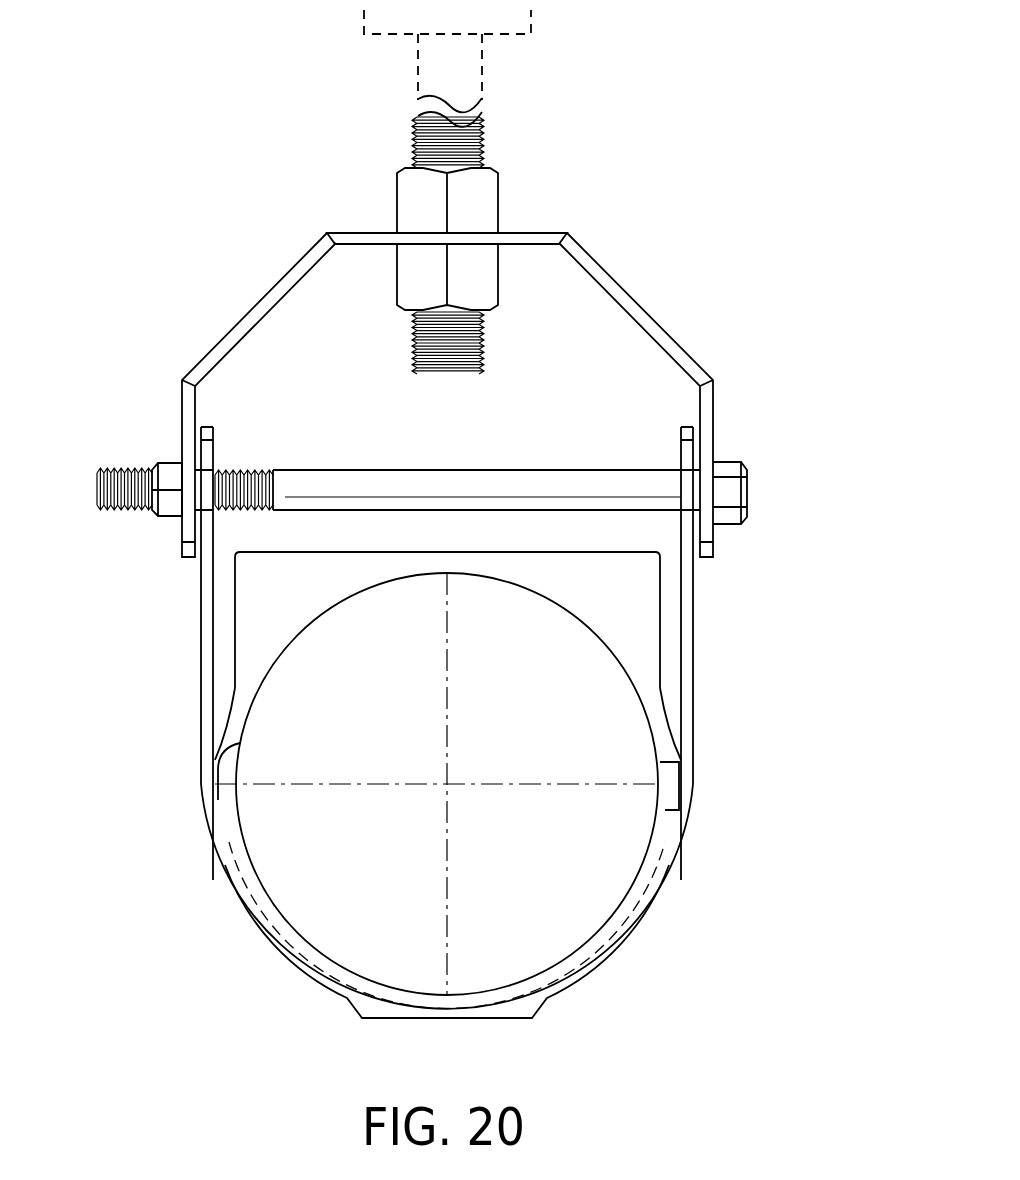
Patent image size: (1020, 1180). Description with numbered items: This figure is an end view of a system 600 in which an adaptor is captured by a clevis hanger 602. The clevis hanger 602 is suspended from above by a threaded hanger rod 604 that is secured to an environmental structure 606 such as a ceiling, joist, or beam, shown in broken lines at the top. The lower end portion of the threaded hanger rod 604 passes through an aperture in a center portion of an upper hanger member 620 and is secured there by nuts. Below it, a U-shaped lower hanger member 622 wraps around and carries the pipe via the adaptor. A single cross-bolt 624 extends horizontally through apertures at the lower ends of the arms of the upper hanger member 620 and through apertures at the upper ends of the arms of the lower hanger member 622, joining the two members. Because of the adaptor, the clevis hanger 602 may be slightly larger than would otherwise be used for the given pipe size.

The system 600 is at (612, 995).
The clevis hanger 602 is at (520, 332).
The threaded hanger rod 604 is at (483, 352).
The environmental structure 606 is at (525, 44).
The upper hanger member 620 is at (706, 346).
The U-shaped lower hanger member 622 is at (712, 694).
The cross-bolt 624 is at (537, 455).